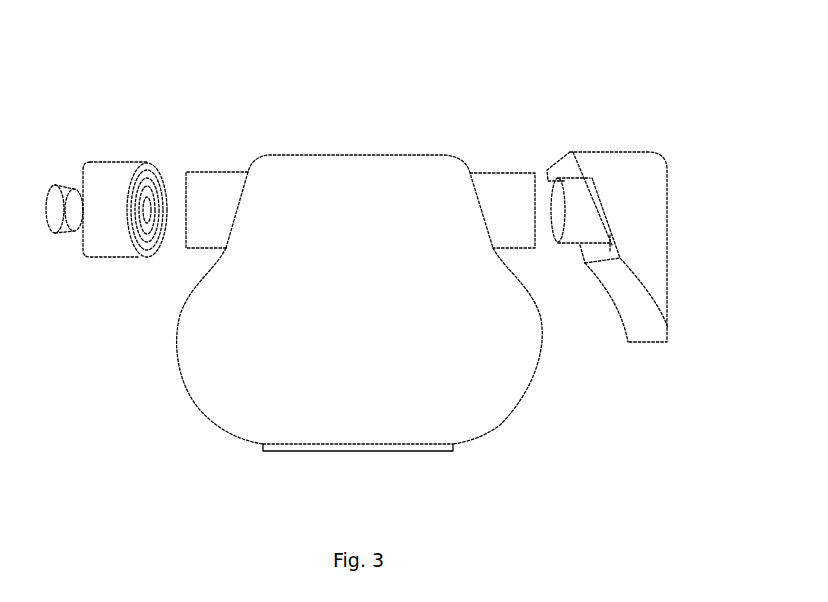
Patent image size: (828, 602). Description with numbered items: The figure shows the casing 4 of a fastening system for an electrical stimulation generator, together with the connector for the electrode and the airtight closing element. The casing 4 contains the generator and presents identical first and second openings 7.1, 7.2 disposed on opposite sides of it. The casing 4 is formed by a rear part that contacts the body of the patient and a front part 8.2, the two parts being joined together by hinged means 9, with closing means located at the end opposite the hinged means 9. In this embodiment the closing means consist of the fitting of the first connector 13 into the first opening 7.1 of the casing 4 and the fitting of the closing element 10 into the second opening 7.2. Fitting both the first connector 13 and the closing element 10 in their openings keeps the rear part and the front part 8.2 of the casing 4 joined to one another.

The casing 4 is at (440, 115).
The first opening 7.1 is at (188, 185).
The second opening 7.2 is at (546, 218).
The front part 8.2 is at (307, 360).
The hinged means 9 is at (360, 450).
The airtight closing element 10 is at (635, 184).
The first connector 13 is at (93, 180).